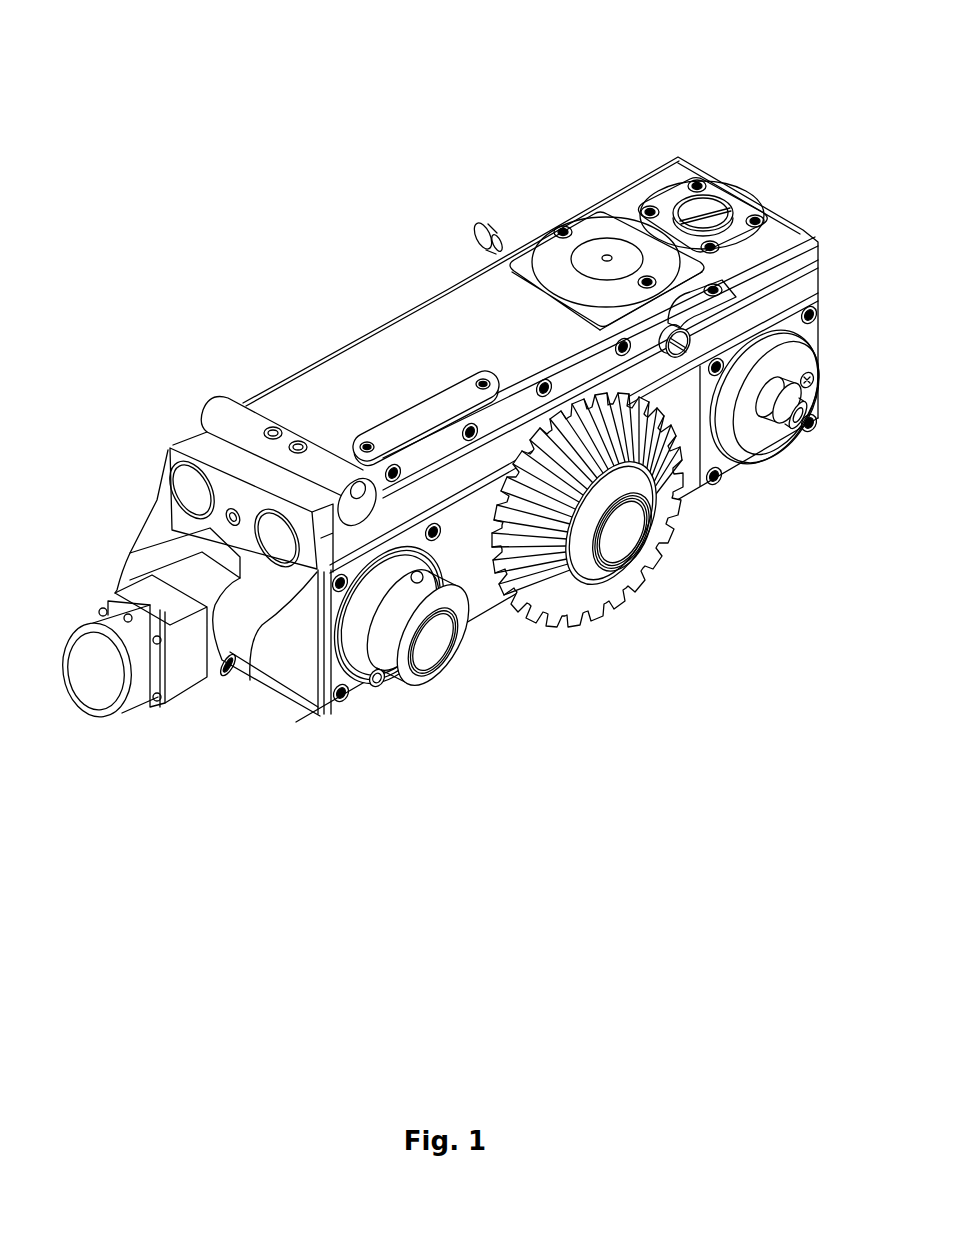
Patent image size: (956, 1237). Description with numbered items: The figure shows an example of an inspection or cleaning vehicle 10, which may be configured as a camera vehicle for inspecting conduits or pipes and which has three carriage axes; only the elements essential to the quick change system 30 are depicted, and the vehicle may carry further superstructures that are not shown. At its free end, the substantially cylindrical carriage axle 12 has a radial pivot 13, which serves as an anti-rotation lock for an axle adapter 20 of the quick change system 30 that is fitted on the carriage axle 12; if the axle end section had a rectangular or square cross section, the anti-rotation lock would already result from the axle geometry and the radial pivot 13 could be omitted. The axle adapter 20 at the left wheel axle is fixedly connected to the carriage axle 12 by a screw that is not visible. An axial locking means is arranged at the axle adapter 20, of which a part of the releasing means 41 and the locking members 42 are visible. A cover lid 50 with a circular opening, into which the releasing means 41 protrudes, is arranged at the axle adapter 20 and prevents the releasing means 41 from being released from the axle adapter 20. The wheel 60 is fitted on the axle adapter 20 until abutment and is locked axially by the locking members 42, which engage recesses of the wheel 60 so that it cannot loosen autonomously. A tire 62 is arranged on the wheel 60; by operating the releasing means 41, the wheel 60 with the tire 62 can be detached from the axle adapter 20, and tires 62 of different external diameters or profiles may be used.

The inspection or cleaning vehicle 10 is at (330, 148).
The carriage axle 12 is at (773, 418).
The radial pivot 13 is at (800, 428).
The axle adapter 20 is at (375, 686).
The quick change system 30 is at (611, 589).
The releasing means 41 is at (428, 647).
The locking members 42 is at (378, 688).
The cover lid 50 is at (411, 667).
The wheel 60 is at (587, 589).
The tire 62 is at (548, 632).